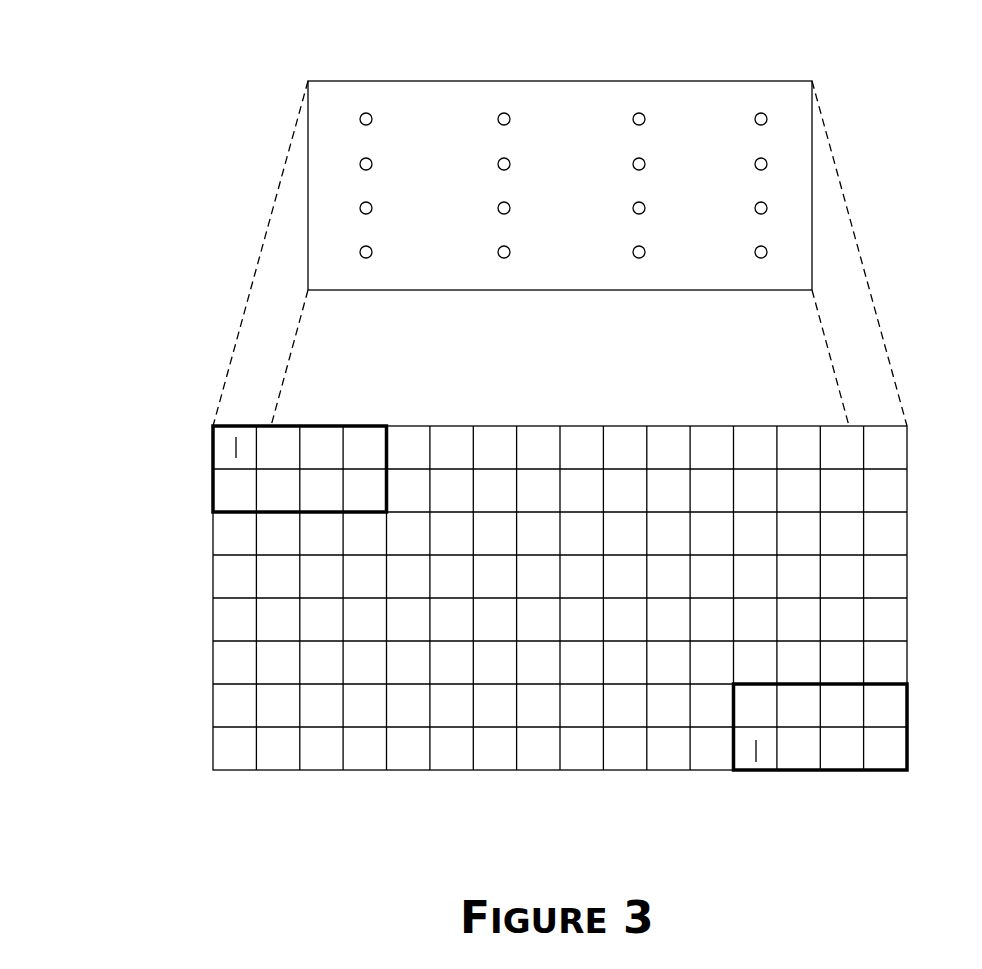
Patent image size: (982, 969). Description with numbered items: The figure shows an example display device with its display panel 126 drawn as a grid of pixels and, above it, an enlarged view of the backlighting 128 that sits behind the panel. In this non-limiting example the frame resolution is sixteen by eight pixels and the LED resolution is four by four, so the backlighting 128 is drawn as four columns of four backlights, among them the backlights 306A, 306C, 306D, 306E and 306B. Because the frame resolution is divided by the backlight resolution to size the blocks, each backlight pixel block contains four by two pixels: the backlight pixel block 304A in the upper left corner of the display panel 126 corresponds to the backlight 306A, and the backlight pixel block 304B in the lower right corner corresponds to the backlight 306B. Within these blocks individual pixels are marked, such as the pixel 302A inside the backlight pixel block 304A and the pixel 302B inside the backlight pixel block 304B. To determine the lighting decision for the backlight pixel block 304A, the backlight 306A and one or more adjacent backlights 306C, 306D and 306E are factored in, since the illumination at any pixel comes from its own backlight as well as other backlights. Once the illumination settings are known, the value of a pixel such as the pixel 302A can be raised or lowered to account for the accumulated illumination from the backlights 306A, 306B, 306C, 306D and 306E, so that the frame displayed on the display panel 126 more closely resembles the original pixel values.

The display panel 126 is at (213, 426).
The backlighting 128 is at (308, 81).
The pixel 302A is at (236, 445).
The pixel 302B is at (756, 757).
The backlight pixel block 304A is at (213, 500).
The backlight pixel block 304B is at (880, 772).
The backlight 306A is at (372, 118).
The backlight 306B is at (755, 252).
The backlight 306C is at (372, 163).
The backlight 306D is at (510, 118).
The backlight 306E is at (510, 163).